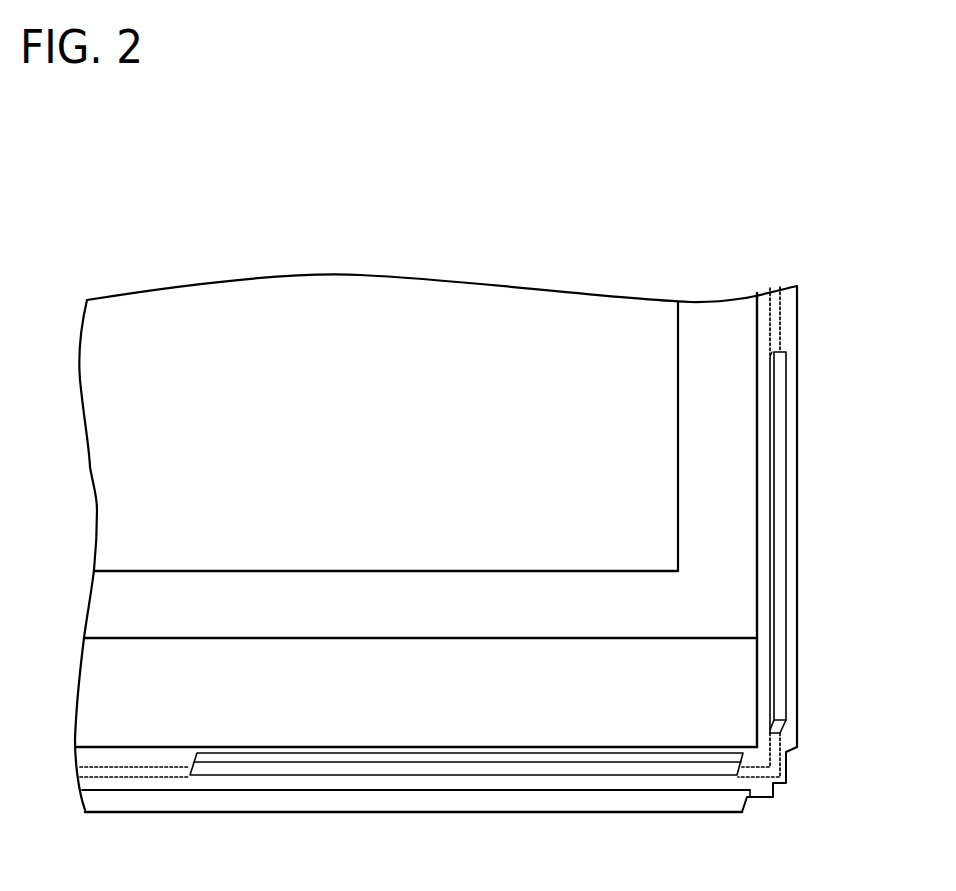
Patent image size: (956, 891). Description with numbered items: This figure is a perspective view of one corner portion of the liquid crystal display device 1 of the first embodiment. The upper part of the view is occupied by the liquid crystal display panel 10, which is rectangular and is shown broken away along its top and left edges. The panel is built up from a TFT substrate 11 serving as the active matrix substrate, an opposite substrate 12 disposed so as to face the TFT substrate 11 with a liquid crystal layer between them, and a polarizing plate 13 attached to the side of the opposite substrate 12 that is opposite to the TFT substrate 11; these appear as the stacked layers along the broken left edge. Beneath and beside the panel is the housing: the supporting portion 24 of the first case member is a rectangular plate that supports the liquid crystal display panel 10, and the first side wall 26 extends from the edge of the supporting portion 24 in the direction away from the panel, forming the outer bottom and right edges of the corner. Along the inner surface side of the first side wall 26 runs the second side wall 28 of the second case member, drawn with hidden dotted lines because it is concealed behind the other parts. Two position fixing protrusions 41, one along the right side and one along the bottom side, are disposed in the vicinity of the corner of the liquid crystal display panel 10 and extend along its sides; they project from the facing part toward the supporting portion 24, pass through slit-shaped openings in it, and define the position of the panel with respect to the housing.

The liquid crystal display device 1 is at (447, 182).
The liquid crystal display panel 10 is at (359, 274).
The TFT substrate 11 is at (107, 690).
The opposite substrate 12 is at (107, 603).
The polarizing plate 13 is at (107, 471).
The supporting portion 24 is at (777, 742).
The first side wall 26 is at (620, 800).
The second side wall 28 is at (782, 322).
The position fixing protrusion 41 is at (778, 590).